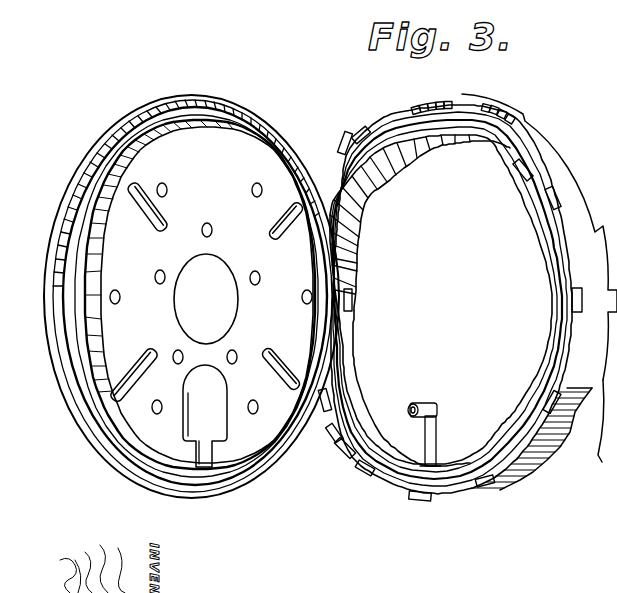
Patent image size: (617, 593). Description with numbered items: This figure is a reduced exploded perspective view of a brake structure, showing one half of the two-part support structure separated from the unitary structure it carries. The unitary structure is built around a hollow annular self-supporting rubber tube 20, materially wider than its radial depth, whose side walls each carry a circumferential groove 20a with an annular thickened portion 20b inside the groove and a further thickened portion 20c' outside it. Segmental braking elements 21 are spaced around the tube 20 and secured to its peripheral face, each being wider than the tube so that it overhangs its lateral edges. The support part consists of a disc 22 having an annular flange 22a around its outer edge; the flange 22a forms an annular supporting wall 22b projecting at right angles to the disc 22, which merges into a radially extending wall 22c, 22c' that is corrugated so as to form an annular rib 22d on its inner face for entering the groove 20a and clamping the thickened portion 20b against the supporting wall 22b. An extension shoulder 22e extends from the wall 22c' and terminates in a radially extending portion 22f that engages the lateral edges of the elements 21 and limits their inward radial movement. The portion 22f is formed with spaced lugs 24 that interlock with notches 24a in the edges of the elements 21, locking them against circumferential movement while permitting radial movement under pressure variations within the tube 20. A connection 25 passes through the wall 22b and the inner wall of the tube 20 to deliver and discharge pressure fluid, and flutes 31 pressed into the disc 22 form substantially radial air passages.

The tube 20 is at (450, 304).
The circumferential groove 20a is at (442, 125).
The annular thickened portion 20b is at (551, 291).
The serrations on ring 20c' is at (457, 96).
The segmental braking elements 21 is at (542, 143).
The disc 22 is at (328, 304).
The annular flange 22a is at (157, 450).
The annular supporting wall 22b is at (99, 283).
The radially extending wall 22c is at (160, 256).
The radially extending wall 22c' is at (200, 257).
The annular rib 22d is at (203, 118).
The extension shoulder 22e is at (102, 150).
The radially extending portion 22f is at (122, 123).
The lugs 24 is at (260, 478).
The notches 24a is at (365, 133).
The connection 25 is at (437, 412).
The flutes 31 is at (118, 392).